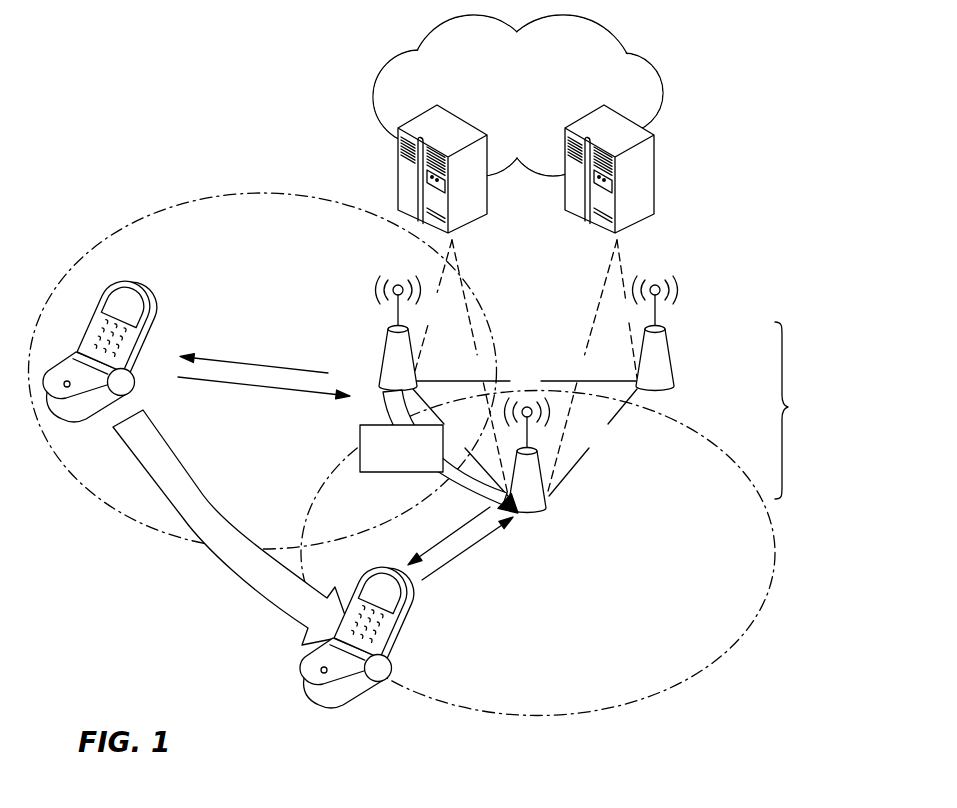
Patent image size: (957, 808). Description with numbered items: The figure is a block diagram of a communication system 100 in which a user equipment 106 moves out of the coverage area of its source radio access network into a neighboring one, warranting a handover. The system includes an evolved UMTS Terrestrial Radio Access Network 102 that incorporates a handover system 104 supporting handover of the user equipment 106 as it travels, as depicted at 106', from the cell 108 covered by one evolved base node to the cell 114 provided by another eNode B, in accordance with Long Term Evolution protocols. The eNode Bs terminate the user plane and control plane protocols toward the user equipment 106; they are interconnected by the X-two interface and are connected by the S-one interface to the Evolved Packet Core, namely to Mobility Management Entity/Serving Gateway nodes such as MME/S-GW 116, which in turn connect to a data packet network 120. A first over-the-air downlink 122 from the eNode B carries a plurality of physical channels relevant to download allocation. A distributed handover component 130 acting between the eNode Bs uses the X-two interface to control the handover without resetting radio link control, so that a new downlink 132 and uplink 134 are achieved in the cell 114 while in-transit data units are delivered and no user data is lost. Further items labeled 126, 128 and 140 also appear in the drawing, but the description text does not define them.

The communication system 100 is at (765, 70).
The evolved UMTS Terrestrial Radio Access Network (E-UTRAN) 102 is at (800, 410).
The handover (HO) system 104 is at (526, 357).
The user equipment (UE) 106 is at (130, 346).
The user equipment after moving 106' is at (337, 632).
The cell 108 is at (263, 371).
The cell 114 is at (538, 553).
The Mobility Management Entity/Serving Gateway (MME/S-GW) 116 is at (393, 325).
The data packet network 120 is at (236, 362).
The first over-the-air downlink (DL) 122 is at (268, 392).
The MME / S-GW 126 is at (414, 219).
The MME / S-GW 128 is at (653, 220).
The handover component 130 is at (439, 451).
The new downlink (DL) 132 is at (440, 543).
The uplink (UL) 134 is at (475, 541).
The core network 140 is at (660, 113).